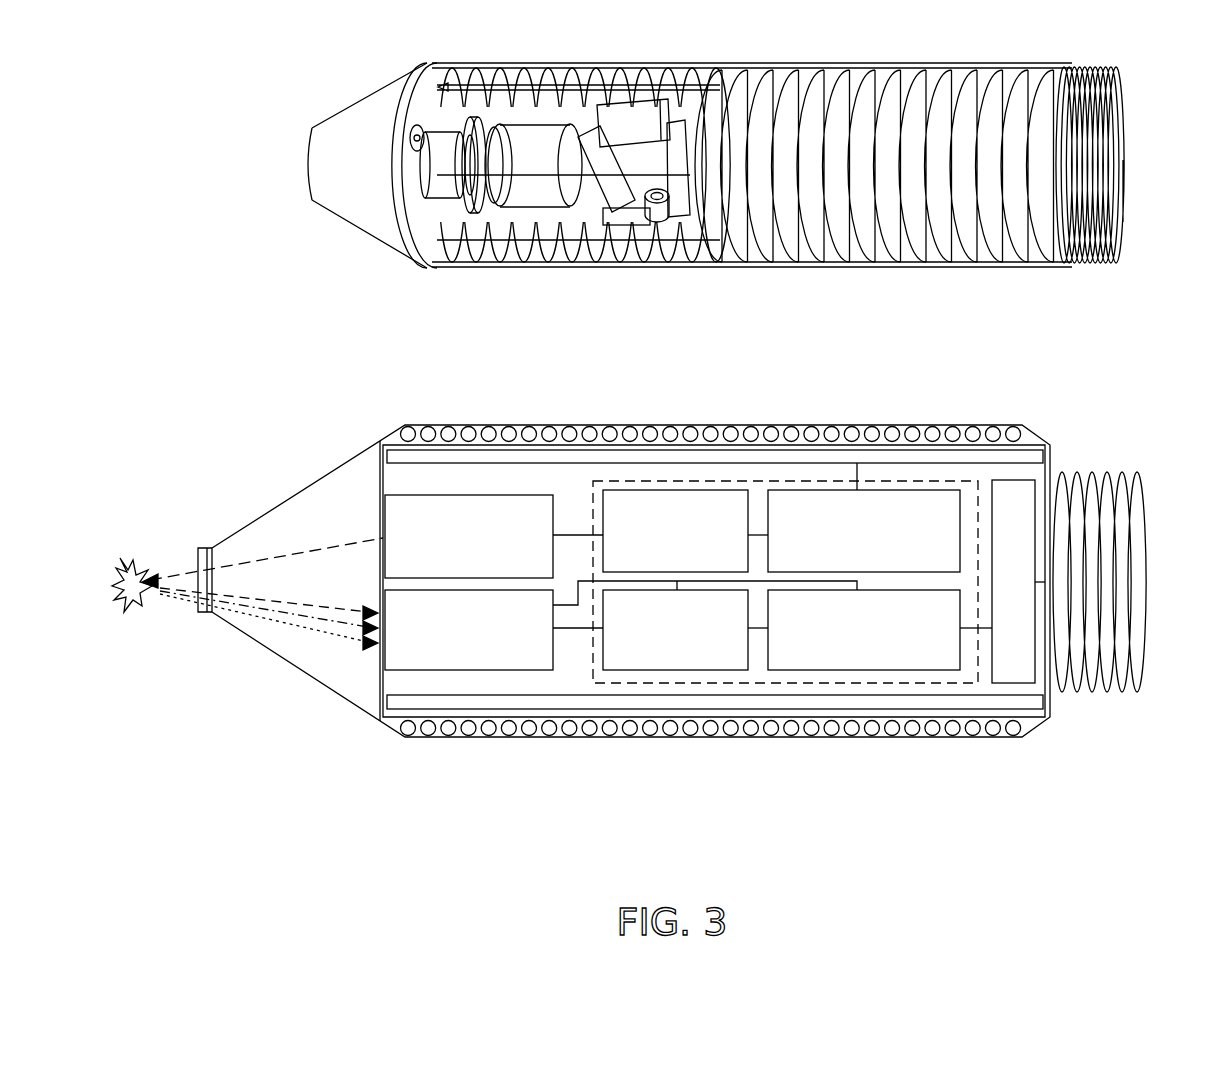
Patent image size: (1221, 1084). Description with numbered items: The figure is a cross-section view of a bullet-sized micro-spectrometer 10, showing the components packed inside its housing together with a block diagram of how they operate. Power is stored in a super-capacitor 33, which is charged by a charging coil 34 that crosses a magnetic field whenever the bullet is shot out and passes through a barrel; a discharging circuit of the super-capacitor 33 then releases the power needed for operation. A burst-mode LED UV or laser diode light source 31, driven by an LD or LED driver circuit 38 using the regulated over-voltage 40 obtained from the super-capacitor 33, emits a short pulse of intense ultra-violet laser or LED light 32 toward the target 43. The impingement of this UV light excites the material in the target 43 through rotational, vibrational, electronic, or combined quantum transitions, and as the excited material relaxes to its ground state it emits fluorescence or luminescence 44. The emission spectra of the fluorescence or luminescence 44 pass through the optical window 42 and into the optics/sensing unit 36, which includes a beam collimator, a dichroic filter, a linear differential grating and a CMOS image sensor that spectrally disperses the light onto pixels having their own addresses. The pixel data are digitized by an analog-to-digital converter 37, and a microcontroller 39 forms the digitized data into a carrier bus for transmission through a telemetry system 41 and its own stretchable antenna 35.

The micro-spectrometer 10 is at (230, 142).
The light source 31 is at (390, 558).
The laser or LED light 32 is at (318, 523).
The super-capacitor 33 is at (503, 458).
The charging coil 34 is at (745, 242).
The stretchable antenna 35 is at (1088, 270).
The optics/sensing unit 36 is at (621, 625).
The analog-to-digital converter 37 is at (685, 630).
The LD or LED driver circuit 38 is at (685, 531).
The microcontroller 39 is at (880, 630).
The regulated over-voltage 40 is at (864, 531).
The telemetry system 41 is at (1012, 543).
The optical window 42 is at (196, 616).
The target 43 is at (135, 556).
The fluorescence or luminescence 44 is at (300, 645).